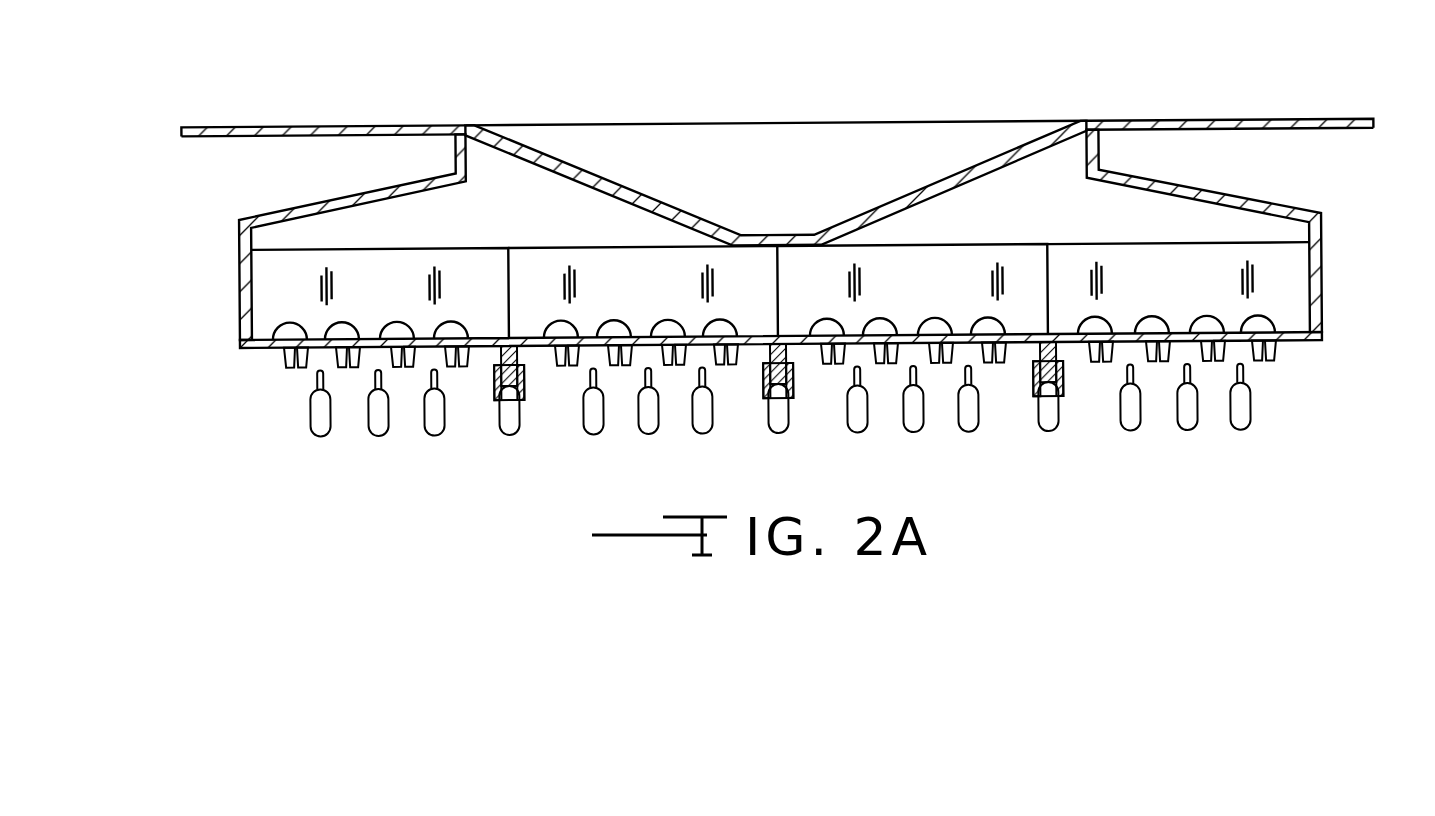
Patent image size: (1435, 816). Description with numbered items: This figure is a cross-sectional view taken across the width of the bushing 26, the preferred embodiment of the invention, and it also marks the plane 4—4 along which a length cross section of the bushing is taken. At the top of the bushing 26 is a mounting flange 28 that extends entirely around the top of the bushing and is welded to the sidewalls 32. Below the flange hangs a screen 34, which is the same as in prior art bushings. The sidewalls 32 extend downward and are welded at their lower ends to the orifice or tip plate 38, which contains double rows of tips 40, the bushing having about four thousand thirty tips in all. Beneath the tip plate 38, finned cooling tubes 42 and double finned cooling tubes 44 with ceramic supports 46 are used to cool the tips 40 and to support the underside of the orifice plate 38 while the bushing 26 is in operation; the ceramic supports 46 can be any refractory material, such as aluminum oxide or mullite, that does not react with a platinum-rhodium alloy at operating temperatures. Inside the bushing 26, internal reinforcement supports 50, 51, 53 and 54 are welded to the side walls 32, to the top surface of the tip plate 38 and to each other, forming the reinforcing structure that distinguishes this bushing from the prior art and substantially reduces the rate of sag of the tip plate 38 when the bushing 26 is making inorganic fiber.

The bushing 26 is at (858, 117).
The mounting flange 28 is at (1250, 117).
The sidewalls 32 is at (240, 293).
The screen 34 is at (610, 180).
The orifice or tip plate 38 is at (262, 352).
The tips 40 is at (1283, 355).
The finned cooling tubes 42 is at (310, 418).
The double finned cooling tubes 44 is at (433, 437).
The ceramic supports 46 is at (530, 357).
The reinforcing member 50 is at (387, 275).
The reinforcing member 51 is at (952, 263).
The reinforcing member 53 is at (607, 272).
The reinforcing member 54 is at (1123, 263).
The section plane 4- 4 is at (305, 53).